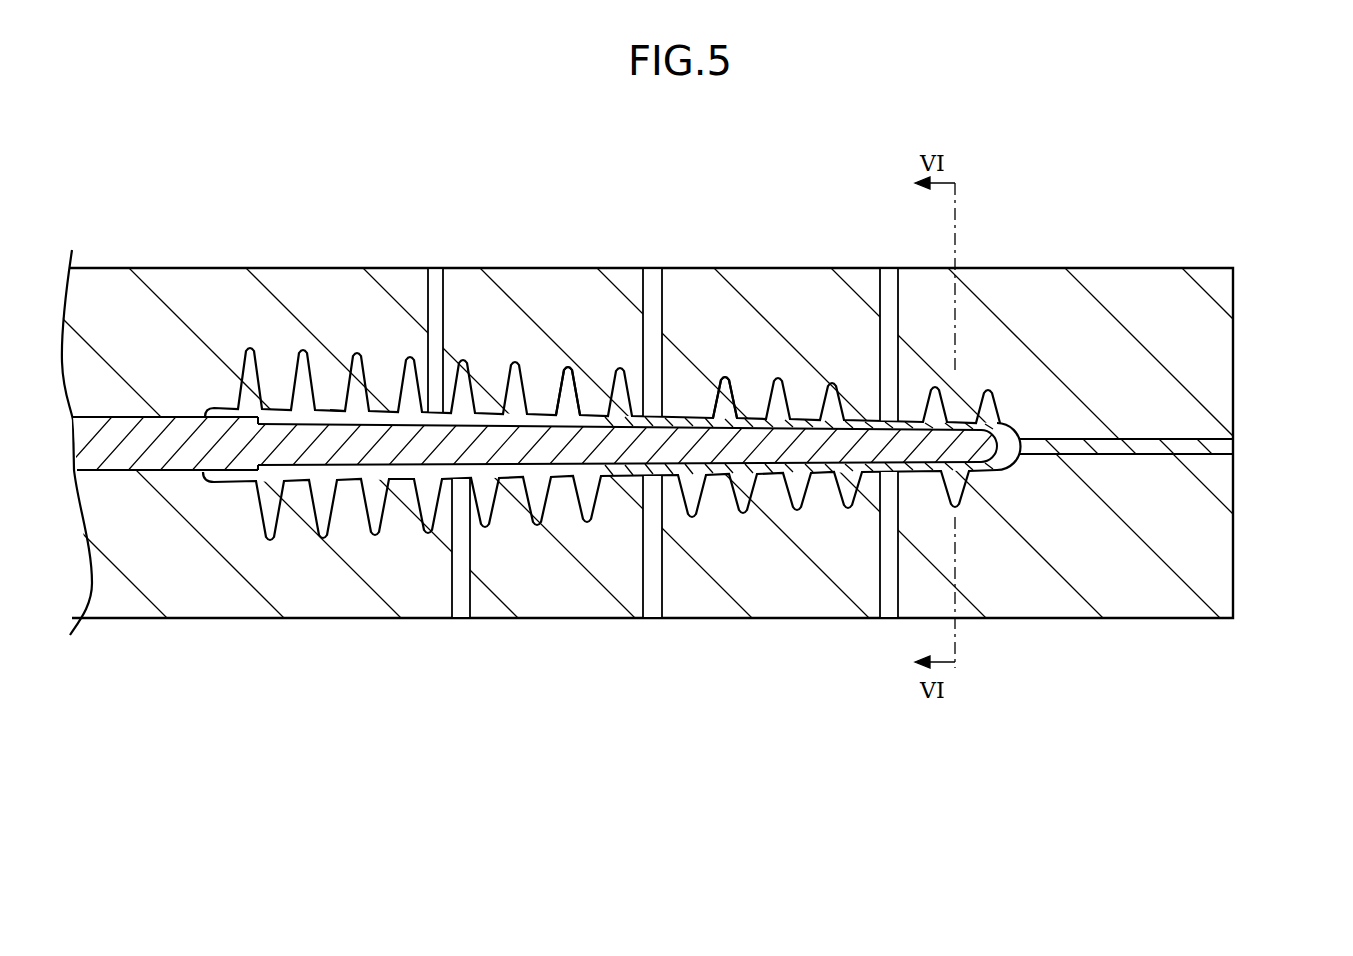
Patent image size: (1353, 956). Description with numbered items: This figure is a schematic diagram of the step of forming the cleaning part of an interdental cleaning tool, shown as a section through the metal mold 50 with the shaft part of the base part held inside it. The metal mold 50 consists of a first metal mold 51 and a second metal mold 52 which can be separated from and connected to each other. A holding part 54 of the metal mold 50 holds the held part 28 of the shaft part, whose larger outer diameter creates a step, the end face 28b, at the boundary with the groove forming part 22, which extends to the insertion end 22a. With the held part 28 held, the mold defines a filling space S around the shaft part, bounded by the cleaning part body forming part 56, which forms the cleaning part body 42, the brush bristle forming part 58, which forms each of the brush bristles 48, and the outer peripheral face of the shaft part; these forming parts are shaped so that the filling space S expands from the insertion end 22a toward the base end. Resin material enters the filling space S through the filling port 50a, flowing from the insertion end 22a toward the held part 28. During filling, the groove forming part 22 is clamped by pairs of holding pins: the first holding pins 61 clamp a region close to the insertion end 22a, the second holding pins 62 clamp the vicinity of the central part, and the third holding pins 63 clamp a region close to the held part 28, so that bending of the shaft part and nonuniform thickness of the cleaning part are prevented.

The groove forming part 22 is at (783, 443).
The insertion end 22a is at (1010, 430).
The held part 28 is at (155, 455).
The end face of the held part 28b is at (260, 417).
The cleaning part body 42 is at (752, 413).
The brush bristles 48 is at (722, 375).
The metal mold 50 is at (1290, 337).
The filling port 50a is at (1145, 439).
The first metal mold 51 is at (1210, 362).
The second metal mold 52 is at (1210, 512).
The holding part 54 is at (185, 417).
The cleaning part body forming part 56 is at (497, 413).
The brush bristle forming part 58 is at (563, 393).
The first holding pins 61 is at (888, 282).
The second holding pins 62 is at (655, 282).
The third holding pins 63 is at (433, 280).
The filling space S is at (367, 410).